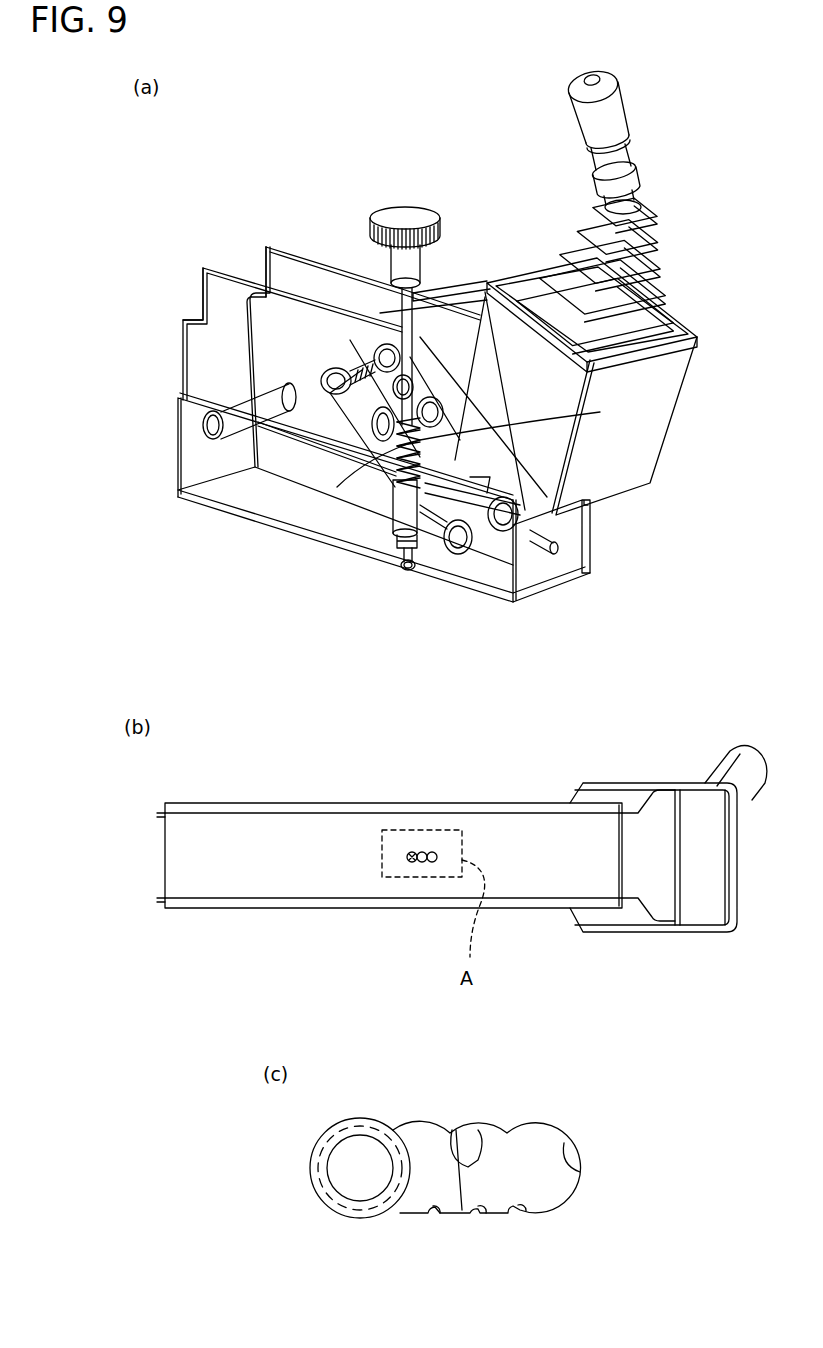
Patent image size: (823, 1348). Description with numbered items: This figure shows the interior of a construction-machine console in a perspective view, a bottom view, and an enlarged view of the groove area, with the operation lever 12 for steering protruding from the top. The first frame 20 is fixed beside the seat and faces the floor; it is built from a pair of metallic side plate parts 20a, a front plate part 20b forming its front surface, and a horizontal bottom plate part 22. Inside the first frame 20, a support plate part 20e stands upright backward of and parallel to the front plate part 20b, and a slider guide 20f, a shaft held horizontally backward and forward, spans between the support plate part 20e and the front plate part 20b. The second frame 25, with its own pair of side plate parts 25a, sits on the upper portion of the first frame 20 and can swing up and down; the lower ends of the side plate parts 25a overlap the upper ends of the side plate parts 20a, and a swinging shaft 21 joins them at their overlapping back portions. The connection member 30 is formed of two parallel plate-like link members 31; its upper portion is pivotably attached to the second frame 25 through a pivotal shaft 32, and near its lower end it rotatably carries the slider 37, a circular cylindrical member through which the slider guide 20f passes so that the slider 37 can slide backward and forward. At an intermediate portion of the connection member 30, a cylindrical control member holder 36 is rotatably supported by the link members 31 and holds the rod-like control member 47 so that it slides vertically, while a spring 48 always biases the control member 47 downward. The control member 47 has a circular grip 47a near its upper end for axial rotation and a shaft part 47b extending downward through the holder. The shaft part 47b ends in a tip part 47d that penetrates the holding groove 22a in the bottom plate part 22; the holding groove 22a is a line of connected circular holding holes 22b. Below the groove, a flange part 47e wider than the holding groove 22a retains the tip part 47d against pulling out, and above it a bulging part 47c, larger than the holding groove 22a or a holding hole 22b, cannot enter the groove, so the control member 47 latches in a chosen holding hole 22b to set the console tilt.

The operation lever 12 is at (630, 148).
The first frame 20 is at (251, 540).
The side plate part 20a is at (183, 396).
The front plate part 20b is at (556, 521).
The support plate part 20e is at (440, 547).
The slider guide 20f is at (548, 533).
The swinging shaft 21 is at (237, 395).
The bottom plate part 22 is at (283, 490).
The holding groove 22a is at (428, 852).
The holding hole 22b is at (387, 1207).
The second frame 25 is at (351, 249).
The side plate part 25a is at (268, 242).
The connection member 30 is at (472, 397).
The link member 31 is at (350, 340).
The pivotal shaft 32 is at (326, 385).
The control member holder 36 is at (600, 412).
The slider 37 is at (480, 555).
The control member 47 is at (436, 267).
The grip 47a is at (436, 234).
The shaft part 47b is at (413, 337).
The bulging part 47c is at (398, 522).
The tip part 47d is at (408, 572).
The flange part 47e is at (402, 563).
The spring 48 is at (396, 430).